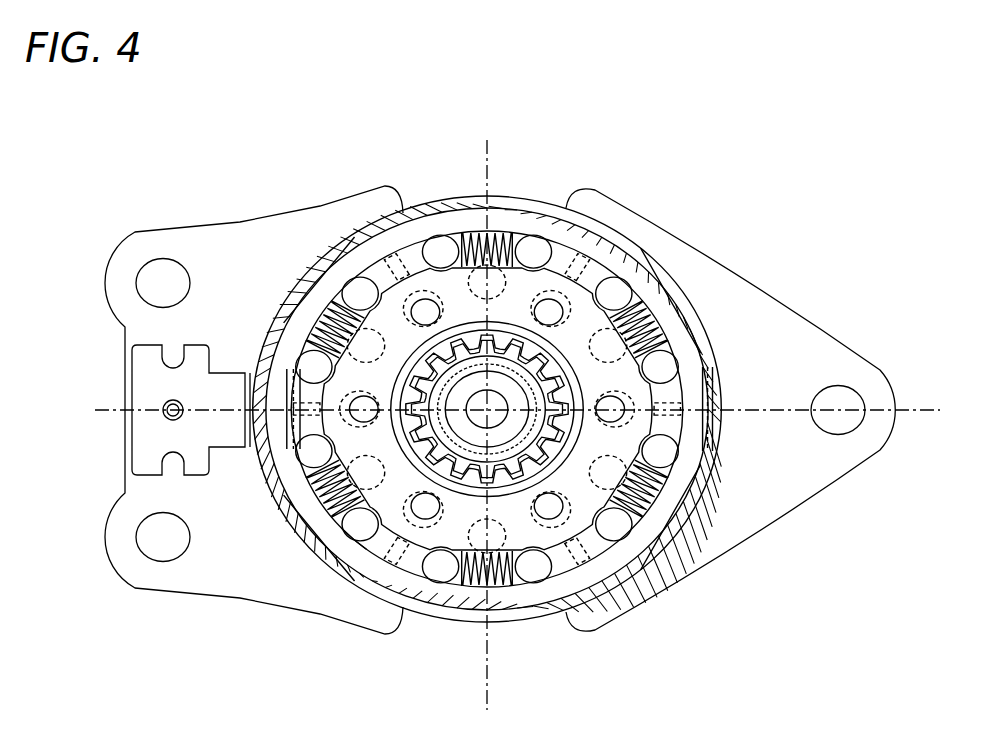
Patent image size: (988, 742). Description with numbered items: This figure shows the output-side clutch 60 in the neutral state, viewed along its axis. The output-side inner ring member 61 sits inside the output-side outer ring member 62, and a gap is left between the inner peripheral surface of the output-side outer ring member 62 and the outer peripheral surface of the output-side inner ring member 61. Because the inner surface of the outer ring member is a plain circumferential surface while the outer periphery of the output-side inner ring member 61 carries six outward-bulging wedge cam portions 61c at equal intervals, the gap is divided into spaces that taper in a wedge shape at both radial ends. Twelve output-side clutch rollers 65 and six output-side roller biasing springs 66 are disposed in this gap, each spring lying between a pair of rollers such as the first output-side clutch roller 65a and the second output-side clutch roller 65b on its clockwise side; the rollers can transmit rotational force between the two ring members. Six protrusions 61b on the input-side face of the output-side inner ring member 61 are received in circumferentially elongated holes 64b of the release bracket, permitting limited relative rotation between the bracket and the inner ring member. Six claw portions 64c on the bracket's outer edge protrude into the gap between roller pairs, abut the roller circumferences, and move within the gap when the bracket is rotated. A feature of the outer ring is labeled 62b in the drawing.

The output-side clutch 60 is at (306, 252).
The output-side inner ring member 61 is at (575, 290).
The protrusions 61b is at (415, 512).
The wedge cam portions 61c is at (405, 552).
The output-side outer ring member 62 is at (372, 258).
The recess of outer ring 62b is at (692, 449).
The elongated holes 64b is at (365, 553).
The claw portions 64c is at (583, 560).
The output-side clutch rollers 65 is at (347, 528).
The first output-side clutch roller 65a is at (440, 238).
The second output-side clutch roller 65b is at (522, 238).
The output-side roller biasing springs 66 is at (488, 232).